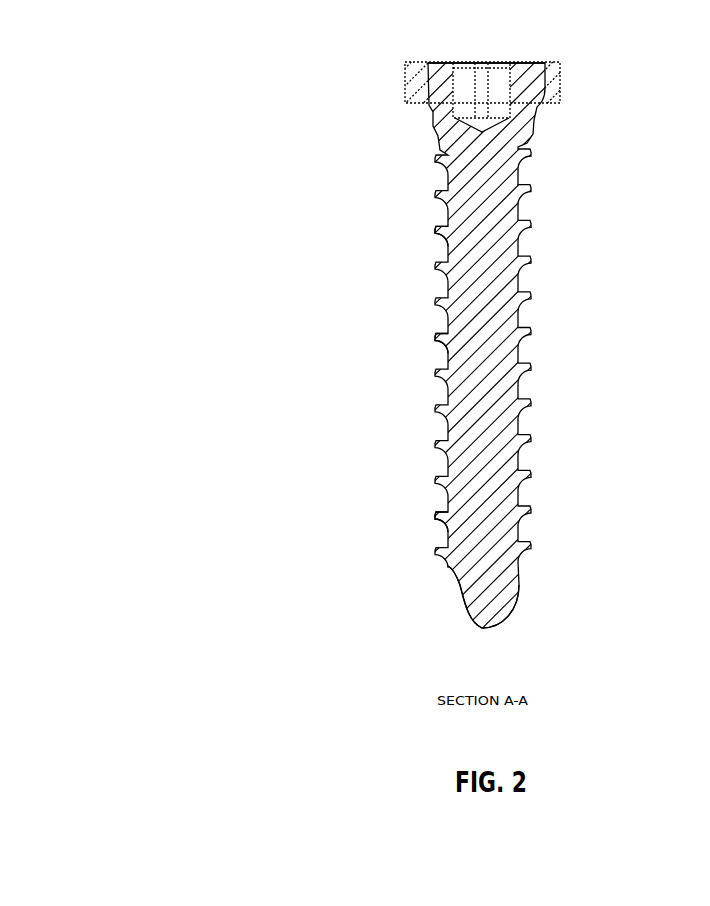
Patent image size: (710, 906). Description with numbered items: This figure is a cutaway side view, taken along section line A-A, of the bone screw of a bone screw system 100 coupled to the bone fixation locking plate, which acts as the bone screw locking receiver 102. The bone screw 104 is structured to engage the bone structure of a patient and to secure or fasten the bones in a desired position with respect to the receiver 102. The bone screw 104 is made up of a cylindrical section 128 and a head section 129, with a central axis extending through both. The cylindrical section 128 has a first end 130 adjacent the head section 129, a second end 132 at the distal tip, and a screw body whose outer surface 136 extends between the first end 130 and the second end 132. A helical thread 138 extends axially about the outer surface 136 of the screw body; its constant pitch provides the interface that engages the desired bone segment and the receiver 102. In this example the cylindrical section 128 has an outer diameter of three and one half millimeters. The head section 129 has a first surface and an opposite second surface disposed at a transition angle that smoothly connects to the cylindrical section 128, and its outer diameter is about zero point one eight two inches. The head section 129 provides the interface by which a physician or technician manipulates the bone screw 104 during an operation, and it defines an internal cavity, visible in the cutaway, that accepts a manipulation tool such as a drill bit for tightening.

The bone screw system 100 is at (183, 158).
The bone screw locking receiver 102 is at (405, 102).
The bone screw 104 is at (518, 212).
The cylindrical section 128 is at (448, 525).
The head section 129 is at (405, 65).
The first end 130 is at (512, 113).
The second end 132 is at (458, 618).
The outer surface 136 is at (448, 228).
The helical thread 138 is at (443, 342).